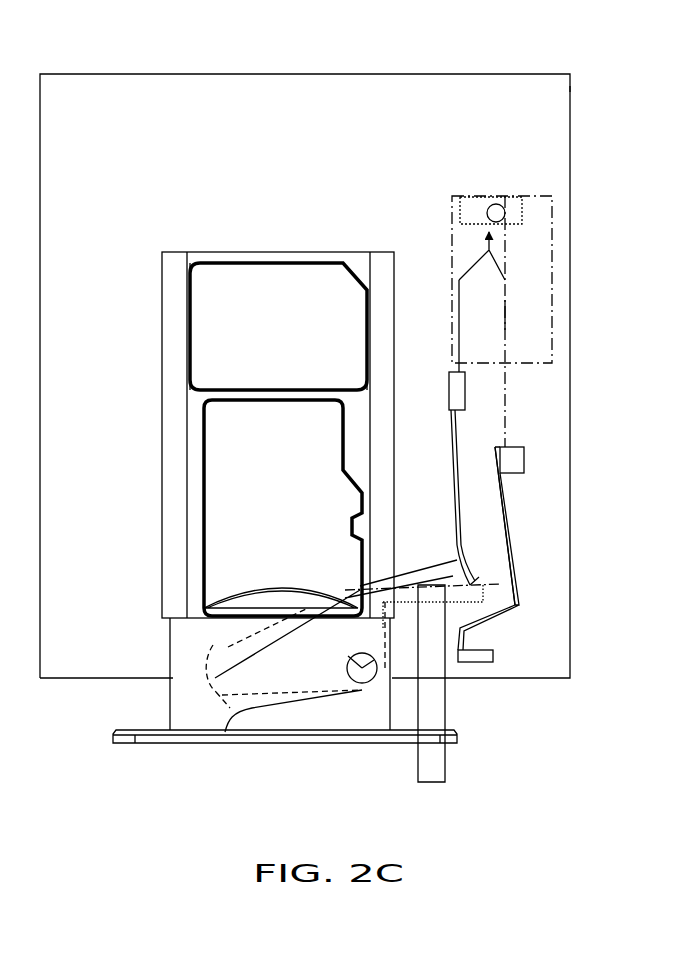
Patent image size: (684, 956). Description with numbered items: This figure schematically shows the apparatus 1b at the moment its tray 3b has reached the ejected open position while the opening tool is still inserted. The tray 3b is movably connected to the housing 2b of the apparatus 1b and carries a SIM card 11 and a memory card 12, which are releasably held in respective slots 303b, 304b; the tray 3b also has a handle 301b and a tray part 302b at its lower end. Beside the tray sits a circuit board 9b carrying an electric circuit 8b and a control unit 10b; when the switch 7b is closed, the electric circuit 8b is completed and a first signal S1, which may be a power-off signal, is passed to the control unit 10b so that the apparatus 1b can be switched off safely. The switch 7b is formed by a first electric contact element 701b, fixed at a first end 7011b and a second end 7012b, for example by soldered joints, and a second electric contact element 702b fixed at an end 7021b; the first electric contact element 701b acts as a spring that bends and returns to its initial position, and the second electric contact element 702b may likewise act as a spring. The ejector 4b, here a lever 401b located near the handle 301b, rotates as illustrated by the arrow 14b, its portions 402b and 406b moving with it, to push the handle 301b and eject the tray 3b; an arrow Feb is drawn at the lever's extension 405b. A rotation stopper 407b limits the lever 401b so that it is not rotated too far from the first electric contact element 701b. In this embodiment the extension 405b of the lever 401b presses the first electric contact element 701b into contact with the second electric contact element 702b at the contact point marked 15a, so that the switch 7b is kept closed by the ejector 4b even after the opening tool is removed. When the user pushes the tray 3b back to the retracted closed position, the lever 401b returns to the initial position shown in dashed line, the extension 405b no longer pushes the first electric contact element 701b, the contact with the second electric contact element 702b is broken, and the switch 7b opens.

The apparatus 1b is at (192, 61).
The housing 2b is at (570, 88).
The tray 3b is at (156, 220).
The upper card receiving portion 303b is at (243, 262).
The SIM card 11 is at (255, 283).
The memory card 12 is at (237, 455).
The lower card receiving portion 304b is at (204, 565).
The handle 301b is at (217, 674).
The base plate 302b is at (449, 727).
The control unit 9b is at (454, 196).
The I/O unit 10b is at (514, 212).
The first signal S1 is at (494, 297).
The signal line 8b is at (506, 324).
The first contact block 7011b is at (465, 382).
The first electric contact element 701b is at (452, 435).
The second contact block 7021b is at (524, 455).
The switch 7b is at (509, 481).
The second electric contact element 702b is at (507, 533).
The first contact terminal 7012b is at (495, 657).
The contact point 15a is at (489, 563).
The extension 405b is at (410, 582).
The ejection force Feb is at (432, 788).
The ejector 4b is at (248, 660).
The rotation stopper 407b is at (293, 702).
The lever end 406b is at (220, 730).
The lever 401b is at (278, 707).
The lever link 402b is at (345, 722).
The arrow 14b is at (362, 683).